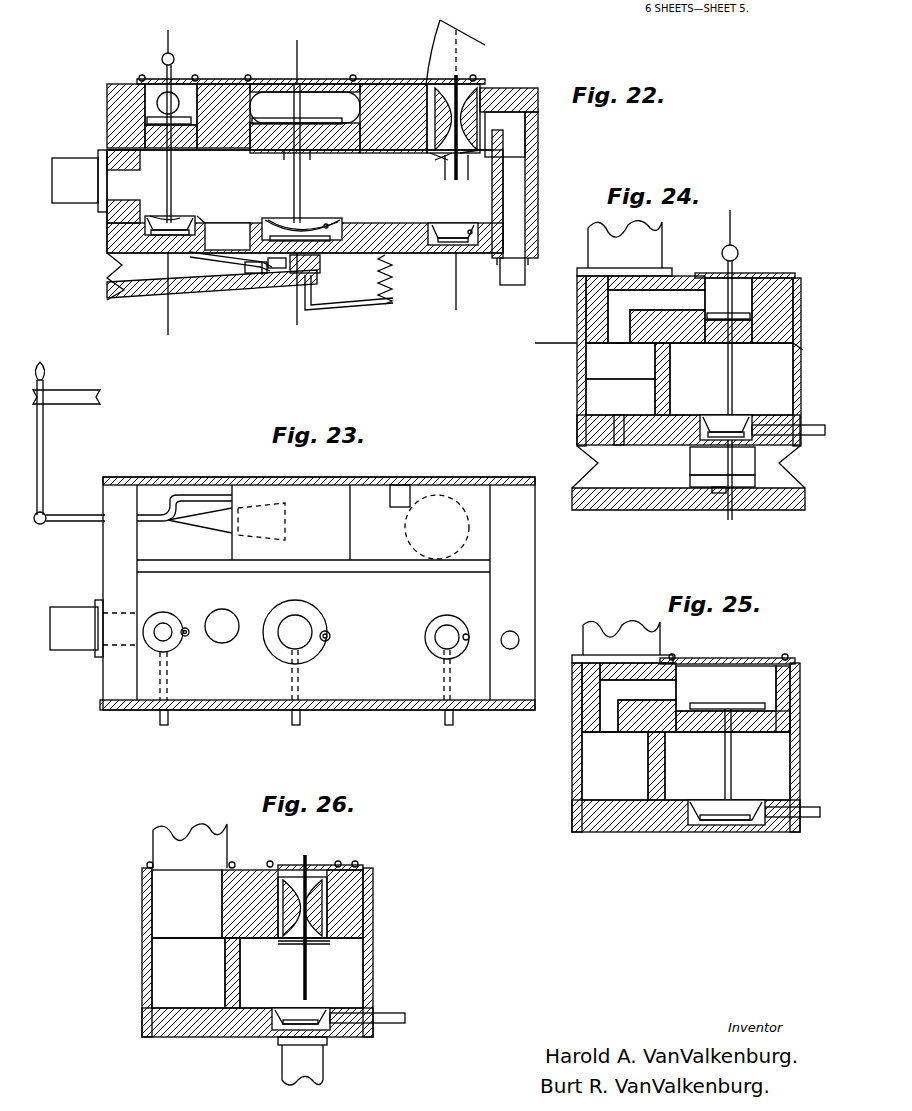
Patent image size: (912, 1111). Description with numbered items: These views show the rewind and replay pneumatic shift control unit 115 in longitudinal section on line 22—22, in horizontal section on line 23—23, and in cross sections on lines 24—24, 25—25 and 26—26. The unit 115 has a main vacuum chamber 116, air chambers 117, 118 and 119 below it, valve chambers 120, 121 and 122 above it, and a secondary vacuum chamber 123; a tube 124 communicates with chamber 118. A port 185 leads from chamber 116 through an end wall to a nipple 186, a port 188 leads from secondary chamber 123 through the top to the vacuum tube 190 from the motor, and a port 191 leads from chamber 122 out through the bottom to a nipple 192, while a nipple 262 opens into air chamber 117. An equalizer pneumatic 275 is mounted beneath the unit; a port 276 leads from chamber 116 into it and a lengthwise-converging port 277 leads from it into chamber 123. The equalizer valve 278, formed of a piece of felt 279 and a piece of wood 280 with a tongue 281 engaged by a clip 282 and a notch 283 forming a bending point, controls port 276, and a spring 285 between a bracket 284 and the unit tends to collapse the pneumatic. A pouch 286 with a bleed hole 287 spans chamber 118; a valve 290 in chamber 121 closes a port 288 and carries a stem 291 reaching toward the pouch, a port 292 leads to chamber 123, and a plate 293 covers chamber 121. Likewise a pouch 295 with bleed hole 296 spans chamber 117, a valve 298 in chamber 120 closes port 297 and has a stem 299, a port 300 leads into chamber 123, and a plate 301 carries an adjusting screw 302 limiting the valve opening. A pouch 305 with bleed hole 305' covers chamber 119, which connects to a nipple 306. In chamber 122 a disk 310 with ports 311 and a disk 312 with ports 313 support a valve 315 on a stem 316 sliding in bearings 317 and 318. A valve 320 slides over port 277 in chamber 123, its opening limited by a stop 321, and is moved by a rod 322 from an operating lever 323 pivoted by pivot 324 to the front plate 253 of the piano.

In FIG. 24, the section line 22— 22 is at (730, 545).
In FIG. 24, the section line 23— 23 is at (662, 347).
In FIG. 22, the section line 24— 24 is at (165, 183).
In FIG. 22, the section line 25— 25 is at (299, 180).
In FIG. 22, the section line 26— 26 is at (457, 168).
In FIG. 22, the rewind and replay pneumatic shift control unit 115 is at (520, 165).
In FIG. 24, the rewind and replay pneumatic shift control unit 115 is at (673, 361).
In FIG. 23, the rewind and replay pneumatic shift control unit 115 is at (317, 717).
In FIG. 25, the rewind and replay pneumatic shift control unit 115 is at (686, 758).
In FIG. 26, the rewind and replay pneumatic shift control unit 115 is at (273, 952).
In FIG. 22, the main vacuum chamber 116 is at (358, 183).
In FIG. 24, the main vacuum chamber 116 is at (731, 379).
In FIG. 23, the main vacuum chamber 116 is at (398, 598).
In FIG. 25, the main vacuum chamber 116 is at (727, 766).
In FIG. 26, the main vacuum chamber 116 is at (301, 973).
In FIG. 22, the air chamber 117 is at (165, 236).
In FIG. 24, the air chamber 117 is at (702, 432).
In FIG. 23, the air chamber 117 is at (182, 645).
In FIG. 22, the air chamber 118 is at (282, 244).
In FIG. 23, the air chamber 118 is at (325, 612).
In FIG. 25, the air chamber 118 is at (698, 818).
In FIG. 22, the air chamber 119 is at (443, 246).
In FIG. 23, the air chamber 119 is at (426, 642).
In FIG. 26, the air chamber 119 is at (276, 1030).
In FIG. 22, the valve chamber 120 is at (184, 90).
In FIG. 24, the valve chamber 120 is at (716, 288).
In FIG. 22, the valve chamber 121 is at (346, 92).
In FIG. 25, the valve chamber 121 is at (795, 805).
In FIG. 22, the valve chamber 122 is at (500, 95).
In FIG. 26, the valve chamber 122 is at (332, 895).
In FIG. 24, the secondary vacuum chamber 123 is at (620, 361).
In FIG. 23, the secondary vacuum chamber 123 is at (373, 542).
In FIG. 25, the secondary vacuum chamber 123 is at (615, 766).
In FIG. 26, the secondary vacuum chamber 123 is at (188, 973).
In FIG. 23, the tube 124 is at (311, 727).
In FIG. 22, the port 185 is at (123, 186).
In FIG. 23, the port 185 is at (120, 640).
In FIG. 22, the nipple 186 is at (75, 200).
In FIG. 23, the nipple 186 is at (76, 628).
In FIG. 26, the port 188 is at (187, 904).
In FIG. 22, the vacuum tube 190 is at (470, 80).
In FIG. 24, the vacuum tube 190 is at (625, 244).
In FIG. 23, the vacuum tube 190 is at (468, 527).
In FIG. 25, the vacuum tube 190 is at (621, 638).
In FIG. 26, the vacuum tube 190 is at (192, 830).
In FIG. 22, the port 191 is at (505, 190).
In FIG. 23, the port 191 is at (520, 638).
In FIG. 22, the nipple 192 is at (527, 276).
In FIG. 26, the nipple 192 is at (316, 1074).
In FIG. 23, the front plate 253 is at (66, 397).
In FIG. 24, the nipple 262 is at (808, 425).
In FIG. 23, the nipple 262 is at (160, 720).
In FIG. 22, the equalizer pneumatic 275 is at (213, 290).
In FIG. 24, the equalizer pneumatic 275 is at (603, 508).
In FIG. 22, the port 276 is at (226, 223).
In FIG. 23, the port 276 is at (222, 626).
In FIG. 24, the port 277 is at (619, 425).
In FIG. 23, the port 277 is at (222, 522).
In FIG. 22, the equalizer valve 278 is at (220, 262).
In FIG. 24, the equalizer valve 278 is at (712, 462).
In FIG. 22, the piece of felt 279 is at (227, 236).
In FIG. 22, the piece of wood 280 is at (260, 270).
In FIG. 22, the tongue 281 is at (275, 270).
In FIG. 24, the tongue 281 is at (750, 480).
In FIG. 22, the clip 282 is at (255, 274).
In FIG. 24, the clip 282 is at (720, 490).
In FIG. 22, the notch 283 is at (295, 273).
In FIG. 24, the notch 283 is at (752, 480).
In FIG. 22, the bracket 284 is at (350, 306).
In FIG. 22, the spring 285 is at (379, 271).
In FIG. 22, the pouch 286 is at (300, 220).
In FIG. 23, the pouch 286 is at (288, 628).
In FIG. 25, the pouch 286 is at (745, 818).
In FIG. 22, the bleed hole 287 is at (328, 224).
In FIG. 23, the bleed hole 287 is at (327, 642).
In FIG. 22, the port 288 is at (291, 158).
In FIG. 25, the port 288 is at (722, 735).
In FIG. 22, the valve 290 is at (302, 117).
In FIG. 25, the valve 290 is at (748, 703).
In FIG. 22, the stem 291 is at (302, 178).
In FIG. 25, the stem 291 is at (724, 785).
In FIG. 22, the port 292 is at (305, 107).
In FIG. 25, the port 292 is at (638, 706).
In FIG. 22, the plate 293 is at (272, 80).
In FIG. 25, the plate 293 is at (708, 659).
In FIG. 22, the pouch 295 is at (112, 266).
In FIG. 24, the pouch 295 is at (712, 418).
In FIG. 23, the pouch 295 is at (160, 625).
In FIG. 22, the bleed hole 296 is at (186, 218).
In FIG. 23, the bleed hole 296 is at (187, 627).
In FIG. 22, the port 297 is at (165, 146).
In FIG. 24, the port 297 is at (740, 343).
In FIG. 22, the valve 298 is at (150, 119).
In FIG. 24, the valve 298 is at (752, 316).
In FIG. 22, the stem 299 is at (173, 186).
In FIG. 24, the stem 299 is at (736, 396).
In FIG. 22, the port 300 is at (157, 103).
In FIG. 24, the port 300 is at (656, 316).
In FIG. 22, the plate 301 is at (143, 76).
In FIG. 24, the plate 301 is at (748, 290).
In FIG. 22, the screw 302 is at (176, 57).
In FIG. 24, the screw 302 is at (738, 250).
In FIG. 22, the pouch 305 is at (444, 219).
In FIG. 23, the pouch 305 is at (453, 646).
In FIG. 26, the pouch 305 is at (311, 1006).
In FIG. 22, the bleed hole 305' is at (475, 218).
In FIG. 23, the bleed hole 305' is at (468, 661).
In FIG. 23, the nipple 306 is at (455, 722).
In FIG. 26, the nipple 306 is at (395, 1013).
In FIG. 22, the disk 310 is at (437, 160).
In FIG. 26, the disk 310 is at (286, 943).
In FIG. 22, the ports 311 is at (462, 160).
In FIG. 26, the ports 311 is at (300, 944).
In FIG. 22, the disk 312 is at (463, 84).
In FIG. 26, the disk 312 is at (309, 870).
In FIG. 22, the ports 313 is at (441, 87).
In FIG. 26, the ports 313 is at (292, 870).
In FIG. 22, the valve 315 is at (470, 124).
In FIG. 26, the valve 315 is at (312, 906).
In FIG. 22, the stem 316 is at (482, 150).
In FIG. 26, the stem 316 is at (302, 992).
In FIG. 22, the bearing 317 is at (442, 172).
In FIG. 26, the bearing 317 is at (306, 950).
In FIG. 22, the bearing 318 is at (470, 84).
In FIG. 26, the bearing 318 is at (306, 855).
In FIG. 24, the valve 320 is at (583, 396).
In FIG. 23, the valve 320 is at (283, 521).
In FIG. 23, the stop 321 is at (400, 485).
In FIG. 23, the rod 322 is at (170, 496).
In FIG. 23, the operating lever 323 is at (44, 472).
In FIG. 23, the pivot 324 is at (44, 388).